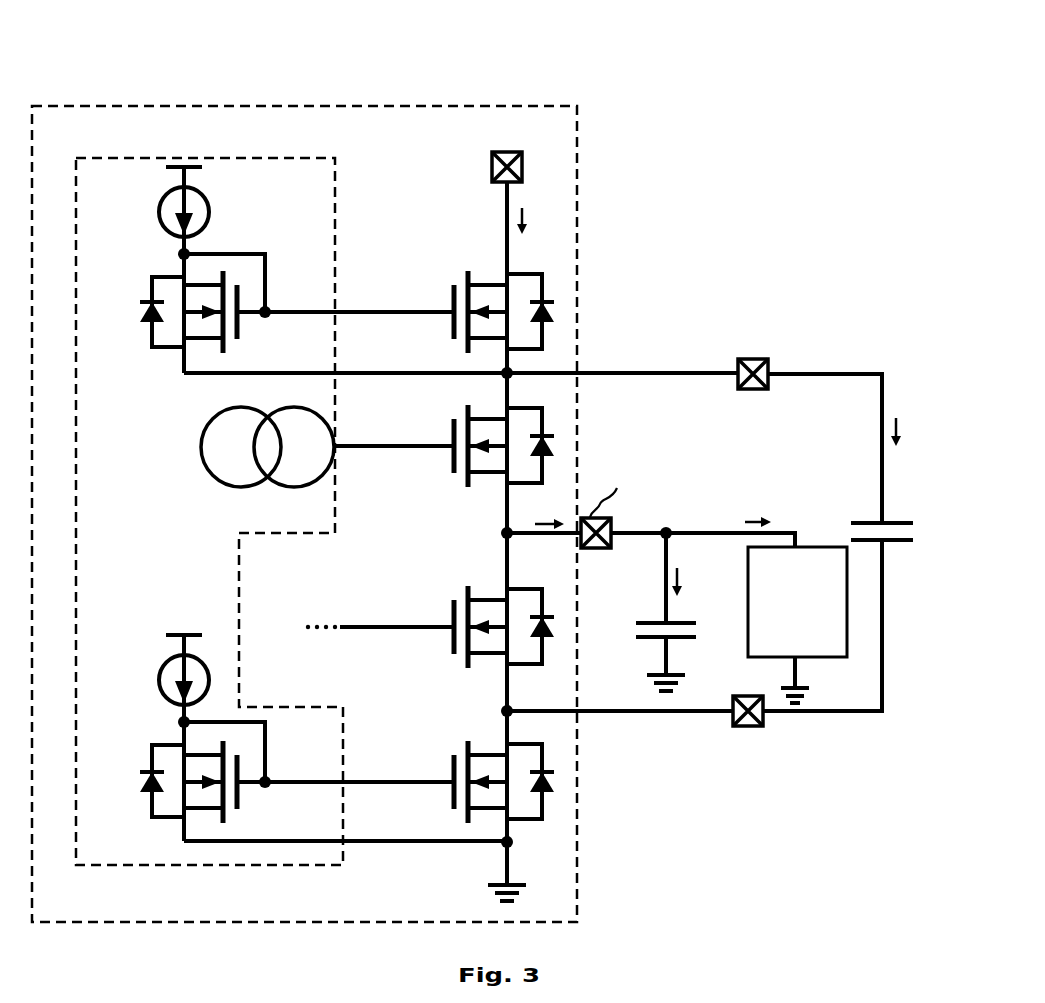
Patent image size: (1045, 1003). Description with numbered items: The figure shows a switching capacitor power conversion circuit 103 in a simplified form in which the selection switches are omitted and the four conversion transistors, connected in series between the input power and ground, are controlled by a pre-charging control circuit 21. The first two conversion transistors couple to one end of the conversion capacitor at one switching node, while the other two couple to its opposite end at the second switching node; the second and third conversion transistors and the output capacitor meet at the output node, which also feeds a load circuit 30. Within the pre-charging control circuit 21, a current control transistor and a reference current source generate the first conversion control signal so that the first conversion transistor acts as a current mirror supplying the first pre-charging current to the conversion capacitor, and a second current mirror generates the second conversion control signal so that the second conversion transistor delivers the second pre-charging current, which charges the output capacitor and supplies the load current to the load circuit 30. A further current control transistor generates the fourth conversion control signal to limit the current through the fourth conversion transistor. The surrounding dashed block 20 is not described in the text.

The switching capacitor power conversion circuit 103 is at (250, 43).
The switching circuit 20 is at (70, 908).
The pre-charging control circuit 21 is at (267, 160).
The load circuit 30 is at (785, 629).